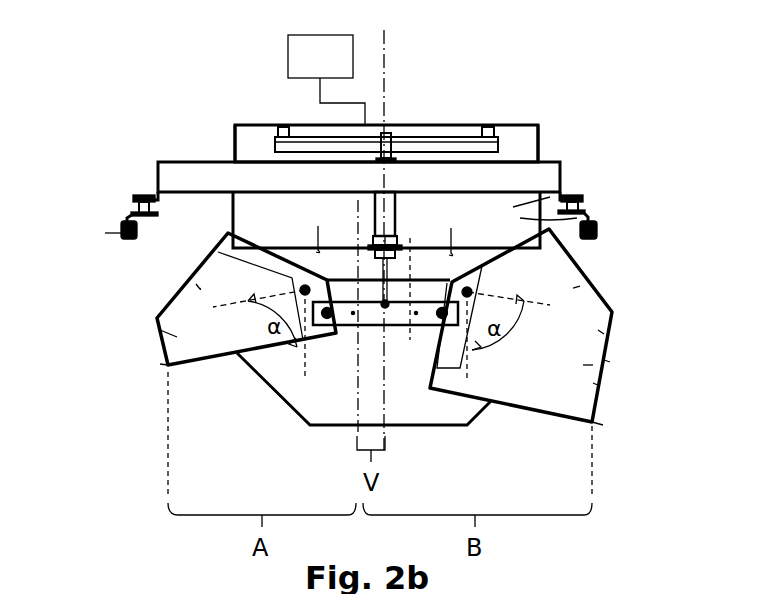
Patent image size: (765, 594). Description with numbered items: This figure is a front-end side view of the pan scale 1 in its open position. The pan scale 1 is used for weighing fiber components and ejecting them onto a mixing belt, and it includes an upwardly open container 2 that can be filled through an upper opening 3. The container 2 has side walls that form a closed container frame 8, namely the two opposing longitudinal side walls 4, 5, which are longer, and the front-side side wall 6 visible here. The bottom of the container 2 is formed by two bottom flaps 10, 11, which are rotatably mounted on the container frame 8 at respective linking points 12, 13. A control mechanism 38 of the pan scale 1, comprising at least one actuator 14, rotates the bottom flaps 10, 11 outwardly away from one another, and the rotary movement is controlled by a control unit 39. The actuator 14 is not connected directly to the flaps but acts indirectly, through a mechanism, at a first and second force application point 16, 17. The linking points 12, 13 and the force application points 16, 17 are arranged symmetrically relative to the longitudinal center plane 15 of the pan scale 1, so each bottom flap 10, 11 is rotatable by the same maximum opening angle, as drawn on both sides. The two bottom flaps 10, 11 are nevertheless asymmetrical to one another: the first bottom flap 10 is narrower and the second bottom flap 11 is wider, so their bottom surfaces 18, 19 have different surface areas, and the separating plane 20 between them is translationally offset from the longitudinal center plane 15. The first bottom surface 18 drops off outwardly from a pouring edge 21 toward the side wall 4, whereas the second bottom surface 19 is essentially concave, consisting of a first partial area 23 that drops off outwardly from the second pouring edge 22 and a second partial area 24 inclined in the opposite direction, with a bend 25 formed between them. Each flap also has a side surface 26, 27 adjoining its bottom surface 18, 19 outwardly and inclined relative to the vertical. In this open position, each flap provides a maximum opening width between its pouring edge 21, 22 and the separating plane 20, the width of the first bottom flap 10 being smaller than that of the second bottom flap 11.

The pan scale 1 is at (104, 74).
The container 2 is at (278, 124).
The upper opening 3 is at (432, 124).
The side wall 4 is at (234, 135).
The side wall 5 is at (540, 132).
The front-side side wall 6 is at (560, 192).
The container frame 8 is at (597, 232).
The first bottom flap 10 is at (173, 297).
The second bottom flap 11 is at (600, 316).
The linking point 12 is at (218, 252).
The linking point 13 is at (485, 283).
The actuator 14 is at (375, 214).
The longitudinal center plane 15 is at (385, 73).
The first force application point 16 is at (386, 222).
The second force application point 17 is at (454, 227).
The first bottom surface 18 is at (177, 337).
The second bottom surface 19 is at (593, 365).
The separating plane 20 is at (357, 395).
The pouring edge 21 is at (167, 365).
The second pouring edge 22 is at (593, 423).
The first partial area 23 is at (593, 383).
The second partial area 24 is at (598, 330).
The bend 25 is at (604, 360).
The side surface 26 is at (200, 288).
The side surface 27 is at (573, 288).
The control mechanism 38 is at (408, 195).
The control unit 39 is at (326, 80).